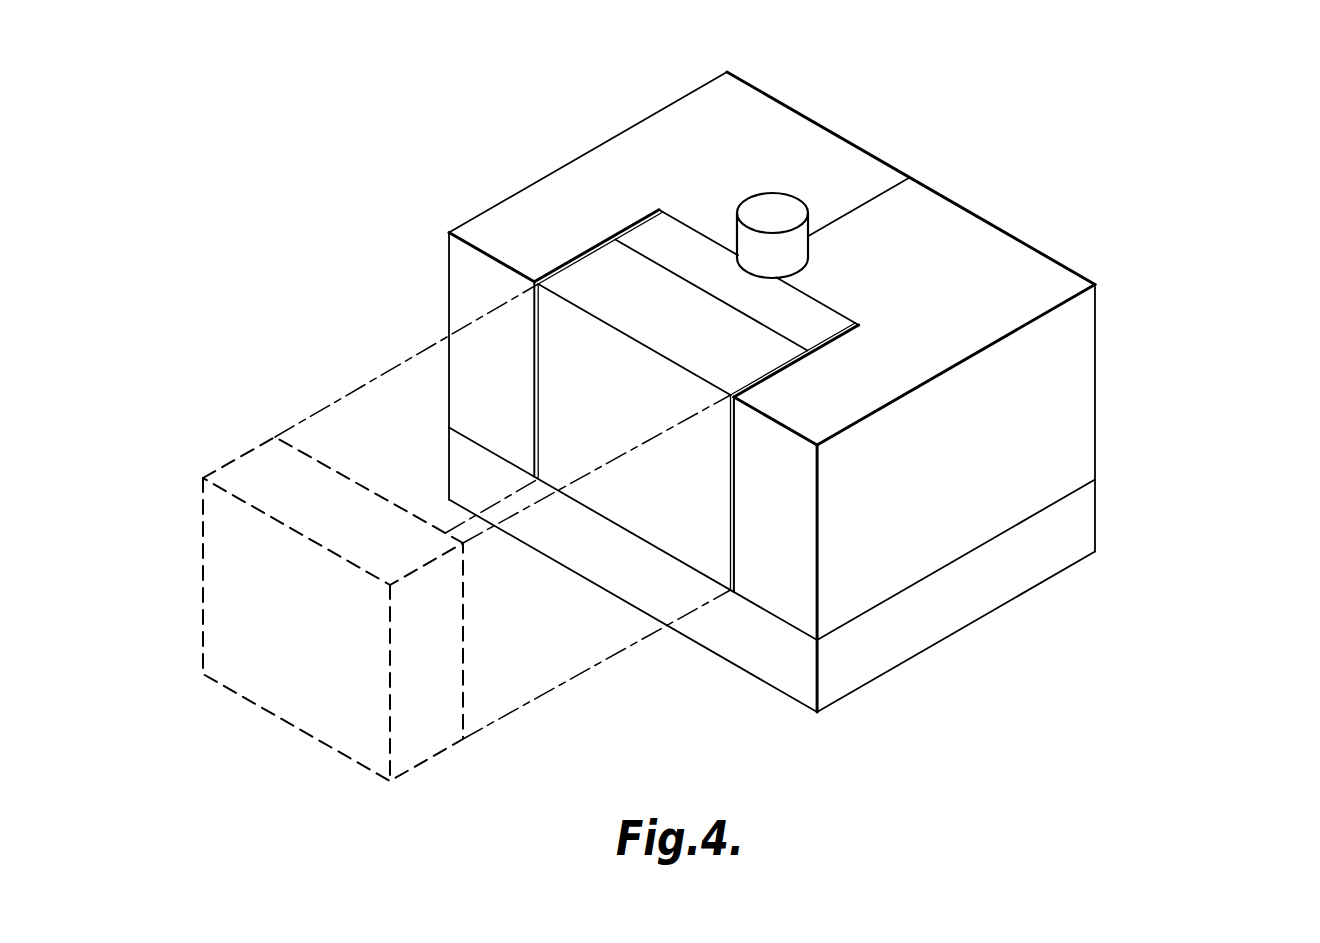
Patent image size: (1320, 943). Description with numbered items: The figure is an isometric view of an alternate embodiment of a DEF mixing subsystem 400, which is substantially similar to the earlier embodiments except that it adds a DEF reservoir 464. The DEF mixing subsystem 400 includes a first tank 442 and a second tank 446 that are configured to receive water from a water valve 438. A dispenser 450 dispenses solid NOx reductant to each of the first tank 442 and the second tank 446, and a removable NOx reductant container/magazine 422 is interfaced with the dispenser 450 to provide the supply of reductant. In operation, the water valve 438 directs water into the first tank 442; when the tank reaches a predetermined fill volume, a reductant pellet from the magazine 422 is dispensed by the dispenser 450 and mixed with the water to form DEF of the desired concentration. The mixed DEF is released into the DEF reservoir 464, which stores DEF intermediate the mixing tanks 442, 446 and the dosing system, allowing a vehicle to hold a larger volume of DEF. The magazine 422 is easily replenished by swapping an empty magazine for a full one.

The DEF mixing subsystem 400 is at (748, 411).
The NOx reductant container/magazine 422 is at (580, 282).
The water valve 438 is at (786, 205).
The first tank 442 is at (777, 108).
The second tank 446 is at (1022, 249).
The dispenser 450 is at (645, 235).
The DEF reservoir 464 is at (607, 562).